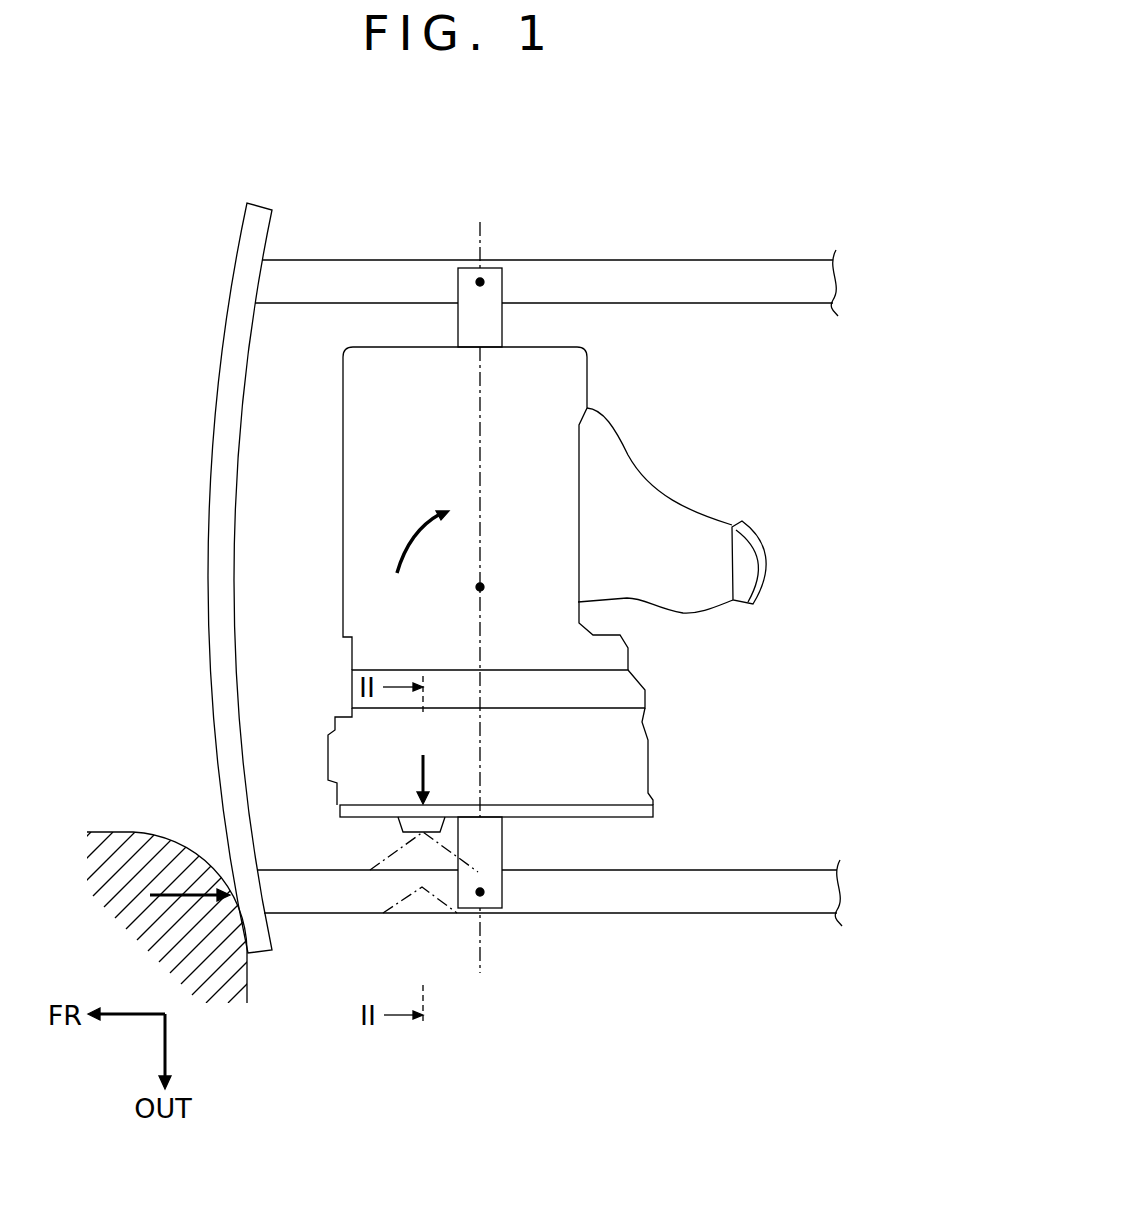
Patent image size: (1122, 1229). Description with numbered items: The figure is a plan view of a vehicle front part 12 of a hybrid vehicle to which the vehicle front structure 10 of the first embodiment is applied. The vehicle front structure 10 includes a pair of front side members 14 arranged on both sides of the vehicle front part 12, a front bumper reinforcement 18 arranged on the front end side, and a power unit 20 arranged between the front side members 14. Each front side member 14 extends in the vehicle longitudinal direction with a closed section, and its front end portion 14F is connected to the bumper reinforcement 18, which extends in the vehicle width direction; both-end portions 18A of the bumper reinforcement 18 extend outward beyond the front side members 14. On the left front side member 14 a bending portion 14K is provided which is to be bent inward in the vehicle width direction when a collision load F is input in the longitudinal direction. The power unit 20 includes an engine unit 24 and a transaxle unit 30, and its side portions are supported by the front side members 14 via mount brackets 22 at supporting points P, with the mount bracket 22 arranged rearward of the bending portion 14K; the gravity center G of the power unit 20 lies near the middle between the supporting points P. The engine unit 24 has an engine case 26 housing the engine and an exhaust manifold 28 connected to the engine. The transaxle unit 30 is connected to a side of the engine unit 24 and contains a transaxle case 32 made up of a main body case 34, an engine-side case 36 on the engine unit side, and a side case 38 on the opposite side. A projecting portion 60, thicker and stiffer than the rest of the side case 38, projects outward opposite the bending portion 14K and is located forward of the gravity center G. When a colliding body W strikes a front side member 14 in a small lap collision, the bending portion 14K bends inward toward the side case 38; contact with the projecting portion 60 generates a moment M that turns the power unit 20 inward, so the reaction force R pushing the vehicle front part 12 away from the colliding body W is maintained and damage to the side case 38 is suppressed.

The vehicle front structure 10 is at (745, 222).
The vehicle front part 12 is at (725, 165).
The front side member 14 is at (620, 260).
The front end portion 14F is at (277, 303).
The bending portion 14K is at (425, 915).
The front bumper reinforcement 18 is at (207, 565).
The both-end portions 18A is at (272, 222).
The power unit 20 is at (315, 537).
The mount bracket 22 is at (503, 325).
The engine unit 24 is at (514, 508).
The engine case 26 is at (588, 372).
The exhaust manifold 28 is at (685, 507).
The transaxle unit 30 is at (350, 688).
The transaxle case 32 is at (538, 727).
The main body case 34 is at (648, 745).
The engine-side case 36 is at (645, 690).
The side case 38 is at (655, 810).
The projecting portion 60 is at (397, 825).
The supporting point P is at (480, 282).
The gravity center G is at (480, 587).
The moment M is at (409, 535).
The reaction force R is at (420, 770).
The colliding body W is at (135, 832).
The collision load F is at (155, 898).